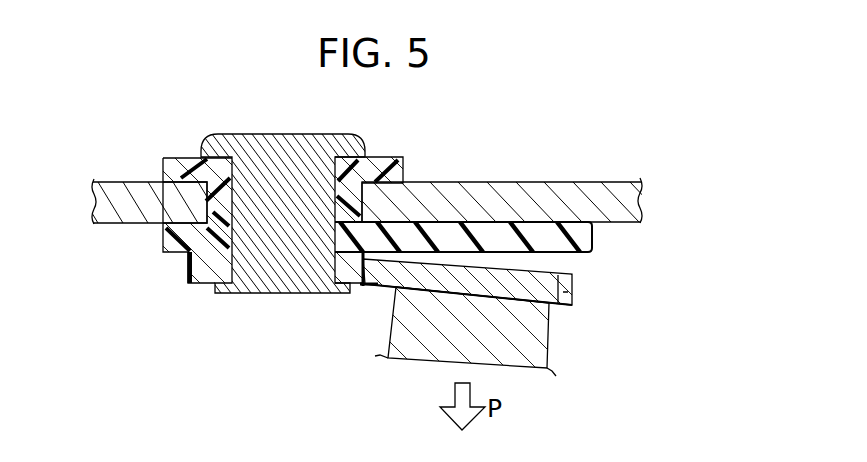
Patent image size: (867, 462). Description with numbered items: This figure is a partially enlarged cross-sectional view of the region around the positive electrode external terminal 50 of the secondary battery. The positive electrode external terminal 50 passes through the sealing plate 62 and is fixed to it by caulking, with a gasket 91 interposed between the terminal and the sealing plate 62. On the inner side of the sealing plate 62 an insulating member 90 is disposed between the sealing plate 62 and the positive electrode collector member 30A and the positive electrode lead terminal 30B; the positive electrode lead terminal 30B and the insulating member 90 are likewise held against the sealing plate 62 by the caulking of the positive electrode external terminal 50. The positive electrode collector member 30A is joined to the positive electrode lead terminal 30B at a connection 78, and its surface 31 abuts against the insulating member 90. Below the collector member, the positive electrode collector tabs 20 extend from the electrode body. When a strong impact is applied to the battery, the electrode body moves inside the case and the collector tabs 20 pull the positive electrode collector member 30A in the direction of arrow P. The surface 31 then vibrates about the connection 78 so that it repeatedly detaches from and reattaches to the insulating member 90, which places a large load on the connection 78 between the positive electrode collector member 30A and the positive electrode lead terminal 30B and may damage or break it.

The positive electrode collector tabs 20 is at (547, 342).
The positive electrode collector member 30A is at (572, 298).
The positive electrode lead terminal 30B is at (207, 266).
The surface 31 is at (560, 265).
The positive electrode external terminal 50 is at (277, 134).
The sealing plate 62 is at (541, 196).
The connection 78 is at (362, 283).
The insulating member 90 is at (453, 232).
The gasket 91 is at (183, 158).